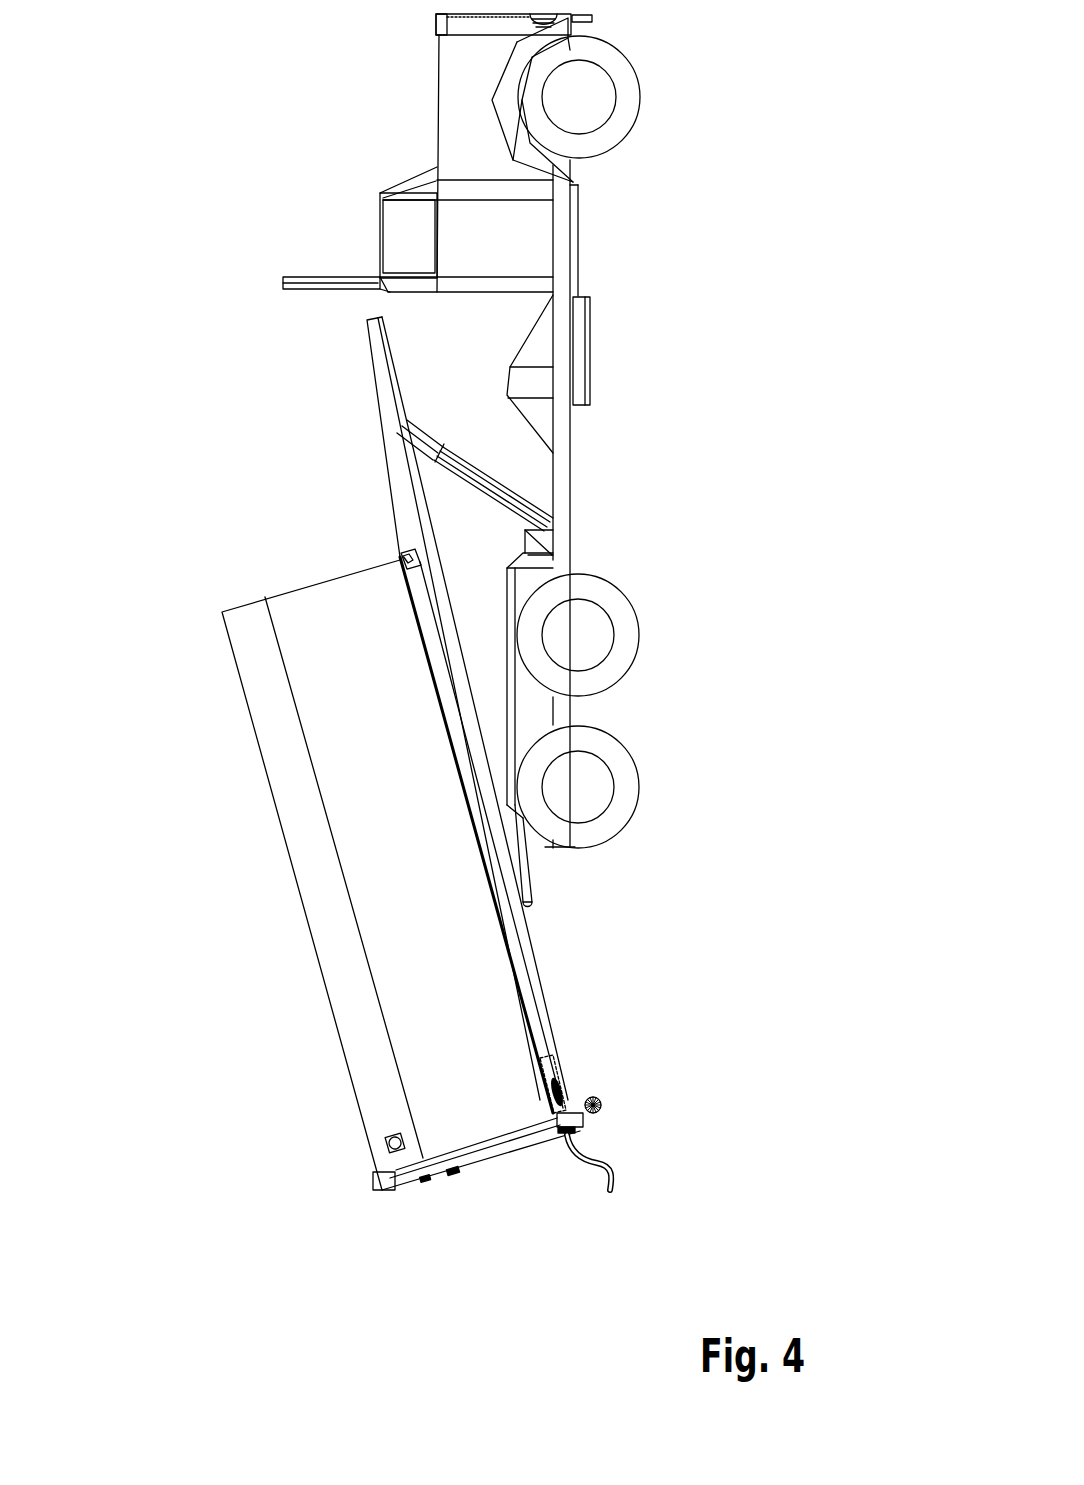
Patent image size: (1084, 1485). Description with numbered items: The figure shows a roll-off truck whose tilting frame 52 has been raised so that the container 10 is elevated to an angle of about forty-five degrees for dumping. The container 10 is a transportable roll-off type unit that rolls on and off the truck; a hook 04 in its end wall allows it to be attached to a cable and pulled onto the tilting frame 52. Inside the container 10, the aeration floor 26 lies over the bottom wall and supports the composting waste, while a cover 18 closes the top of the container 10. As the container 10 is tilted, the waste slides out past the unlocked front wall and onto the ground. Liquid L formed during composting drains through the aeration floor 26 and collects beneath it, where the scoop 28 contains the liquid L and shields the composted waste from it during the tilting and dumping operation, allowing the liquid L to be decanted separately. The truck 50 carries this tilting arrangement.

The truck cab 50 is at (267, 229).
The tilting frame 52 is at (249, 432).
The hook 04 is at (259, 506).
The container 10 is at (257, 594).
The aeration floor 26 is at (329, 835).
The cover 18 is at (344, 875).
The scoop 28 is at (651, 929).
The liquid L is at (657, 1071).